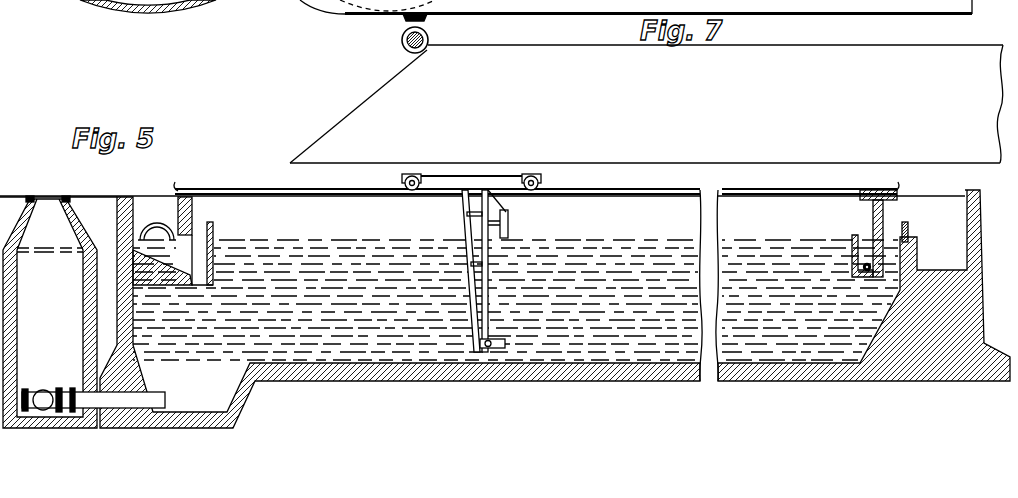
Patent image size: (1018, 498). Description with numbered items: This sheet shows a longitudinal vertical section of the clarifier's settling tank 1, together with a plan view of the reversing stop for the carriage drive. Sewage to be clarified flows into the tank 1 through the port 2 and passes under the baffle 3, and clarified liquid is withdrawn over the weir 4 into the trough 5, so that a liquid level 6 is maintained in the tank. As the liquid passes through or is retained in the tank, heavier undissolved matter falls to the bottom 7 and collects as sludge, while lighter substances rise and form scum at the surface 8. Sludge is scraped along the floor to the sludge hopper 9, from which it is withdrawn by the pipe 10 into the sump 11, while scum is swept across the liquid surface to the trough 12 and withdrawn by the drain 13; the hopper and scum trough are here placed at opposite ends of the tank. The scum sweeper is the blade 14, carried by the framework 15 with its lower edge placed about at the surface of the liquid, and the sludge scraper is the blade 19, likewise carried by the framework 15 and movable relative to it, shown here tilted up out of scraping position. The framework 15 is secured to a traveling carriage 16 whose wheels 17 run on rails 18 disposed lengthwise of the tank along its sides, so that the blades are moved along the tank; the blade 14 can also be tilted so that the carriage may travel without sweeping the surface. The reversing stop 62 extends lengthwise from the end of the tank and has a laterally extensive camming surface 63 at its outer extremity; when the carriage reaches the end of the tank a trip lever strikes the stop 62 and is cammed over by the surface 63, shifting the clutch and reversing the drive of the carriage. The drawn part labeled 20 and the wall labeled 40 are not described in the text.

In FIG. 5, the tank 1 is at (212, 178).
In FIG. 5, the port 2 is at (152, 220).
In FIG. 5, the baffle 3 is at (215, 221).
In FIG. 5, the weir 4 is at (908, 239).
In FIG. 5, the trough 5 is at (942, 246).
In FIG. 5, the liquid level 6 is at (313, 241).
In FIG. 5, the bottom 7 is at (395, 362).
In FIG. 5, the surface 8 is at (593, 241).
In FIG. 5, the sludge hopper 9 is at (206, 413).
In FIG. 5, the pipe 10 is at (113, 409).
In FIG. 5, the sump 11 is at (58, 312).
In FIG. 5, the trough 12 is at (863, 236).
In FIG. 5, the drain 13 is at (865, 275).
In FIG. 5, the blade 14 is at (508, 234).
In FIG. 5, the framework 15 is at (483, 208).
In FIG. 5, the carriage 16 is at (515, 178).
In FIG. 5, the wheels 17 is at (400, 180).
In FIG. 5, the rails 18 is at (287, 194).
In FIG. 5, the blade 19 is at (500, 349).
In FIG. 5, the cup 20 is at (852, 238).
In FIG. 5, the tank wall 40 is at (972, 204).
In FIG. 7, the stop 62 is at (340, 0).
In FIG. 7, the camming surface 63 is at (522, 0).